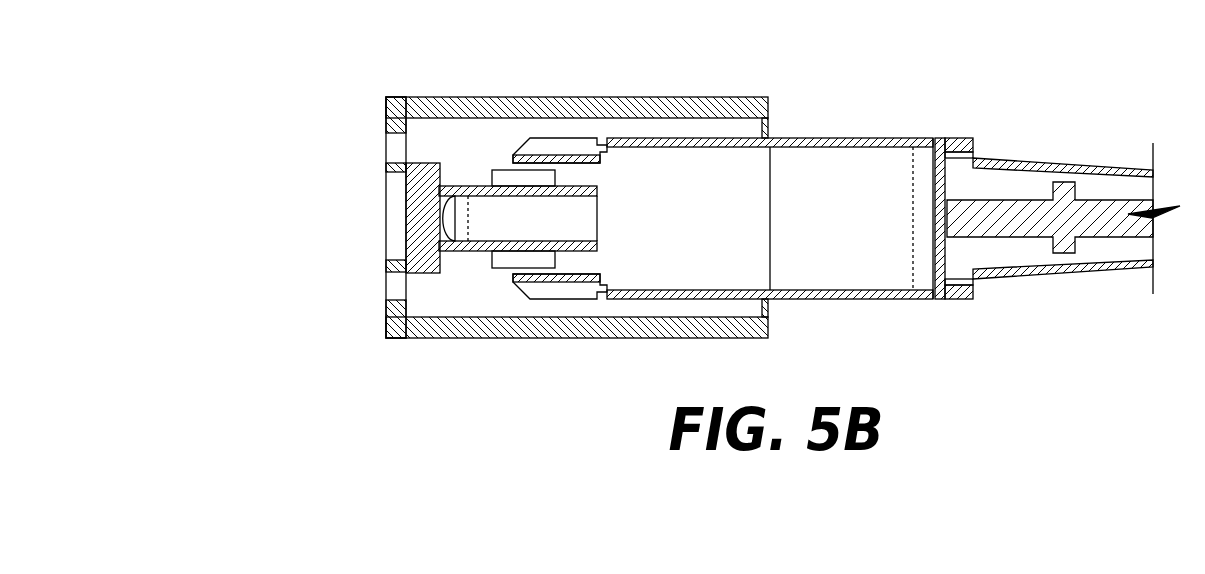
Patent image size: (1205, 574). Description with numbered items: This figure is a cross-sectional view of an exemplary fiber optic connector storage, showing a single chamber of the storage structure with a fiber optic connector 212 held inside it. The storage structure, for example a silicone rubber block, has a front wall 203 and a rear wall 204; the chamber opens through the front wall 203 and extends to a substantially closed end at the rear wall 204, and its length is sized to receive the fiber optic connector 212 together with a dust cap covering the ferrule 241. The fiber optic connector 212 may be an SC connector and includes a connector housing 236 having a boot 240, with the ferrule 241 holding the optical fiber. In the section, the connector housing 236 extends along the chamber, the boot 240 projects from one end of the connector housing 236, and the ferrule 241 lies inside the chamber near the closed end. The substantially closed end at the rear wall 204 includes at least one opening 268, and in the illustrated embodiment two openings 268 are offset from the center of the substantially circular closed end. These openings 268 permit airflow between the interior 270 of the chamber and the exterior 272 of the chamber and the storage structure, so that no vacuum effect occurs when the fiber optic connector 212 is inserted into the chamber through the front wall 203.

The front wall 203 is at (786, 325).
The rear wall 204 is at (375, 107).
The exterior 272 is at (356, 73).
The interior 270 is at (448, 120).
The openings 268 is at (396, 150).
The ferrule 241 is at (422, 258).
The connector housing 236 is at (818, 144).
The boot 240 is at (1113, 168).
The fiber optic connector 212 is at (1001, 76).